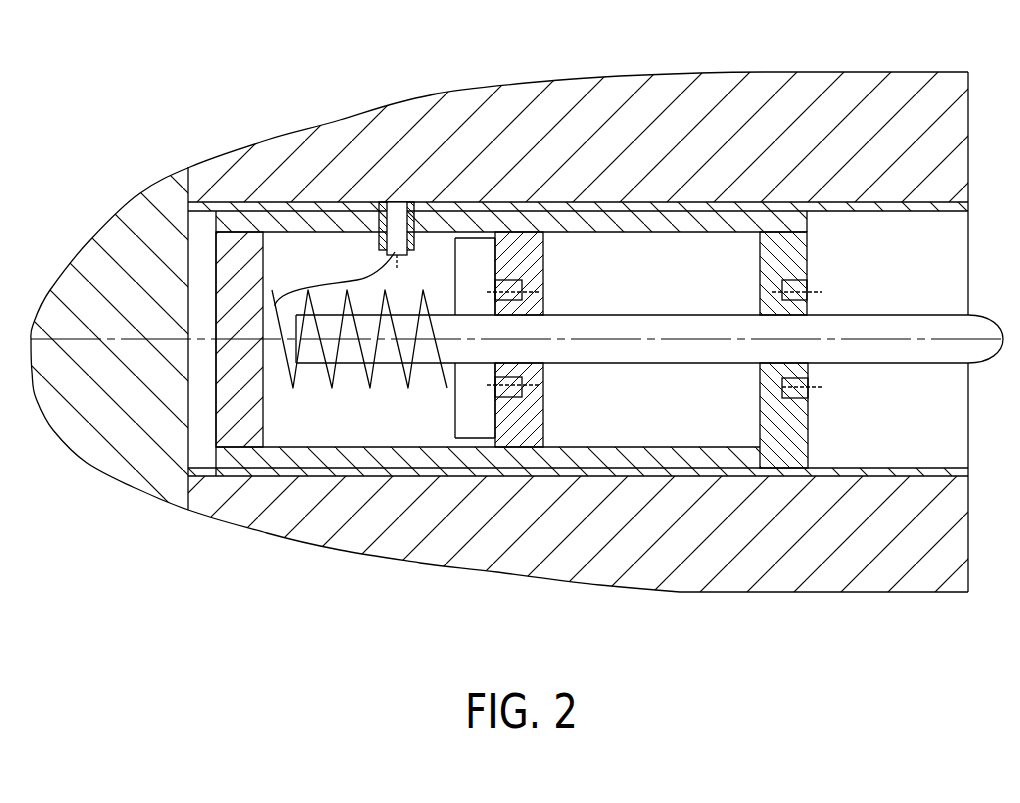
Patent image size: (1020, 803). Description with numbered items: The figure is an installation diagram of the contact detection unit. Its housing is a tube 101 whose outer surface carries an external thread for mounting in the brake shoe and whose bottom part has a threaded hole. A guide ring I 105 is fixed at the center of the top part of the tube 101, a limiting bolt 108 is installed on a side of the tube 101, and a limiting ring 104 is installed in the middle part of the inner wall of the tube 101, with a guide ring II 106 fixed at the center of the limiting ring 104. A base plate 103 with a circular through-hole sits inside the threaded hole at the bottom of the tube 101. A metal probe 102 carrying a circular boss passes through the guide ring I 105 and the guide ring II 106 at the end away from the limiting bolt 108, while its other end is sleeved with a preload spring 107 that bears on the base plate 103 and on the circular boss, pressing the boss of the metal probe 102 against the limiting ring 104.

The tube 101 is at (357, 215).
The metal probe 102 is at (463, 432).
The base plate 103 is at (243, 255).
The limiting ring 104 is at (518, 280).
The guide ring I 105 is at (793, 282).
The guide ring II 106 is at (520, 377).
The preload spring 107 is at (313, 322).
The limiting bolt 108 is at (402, 212).